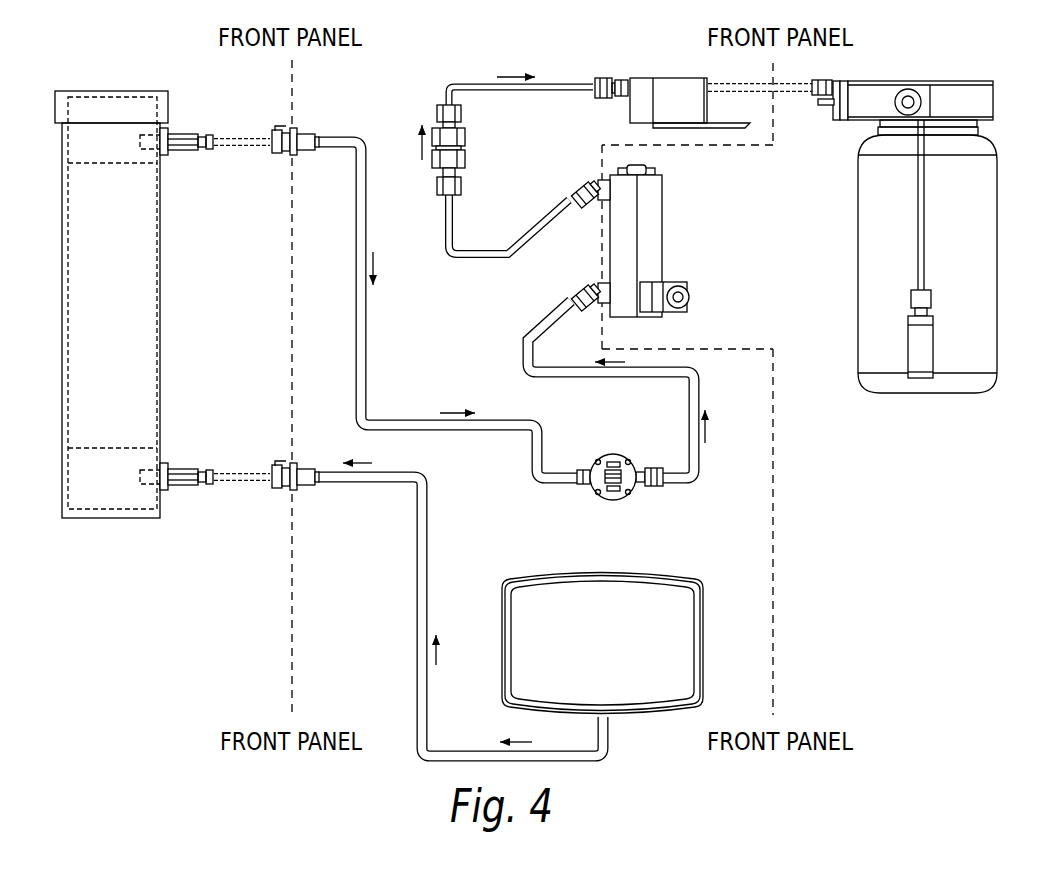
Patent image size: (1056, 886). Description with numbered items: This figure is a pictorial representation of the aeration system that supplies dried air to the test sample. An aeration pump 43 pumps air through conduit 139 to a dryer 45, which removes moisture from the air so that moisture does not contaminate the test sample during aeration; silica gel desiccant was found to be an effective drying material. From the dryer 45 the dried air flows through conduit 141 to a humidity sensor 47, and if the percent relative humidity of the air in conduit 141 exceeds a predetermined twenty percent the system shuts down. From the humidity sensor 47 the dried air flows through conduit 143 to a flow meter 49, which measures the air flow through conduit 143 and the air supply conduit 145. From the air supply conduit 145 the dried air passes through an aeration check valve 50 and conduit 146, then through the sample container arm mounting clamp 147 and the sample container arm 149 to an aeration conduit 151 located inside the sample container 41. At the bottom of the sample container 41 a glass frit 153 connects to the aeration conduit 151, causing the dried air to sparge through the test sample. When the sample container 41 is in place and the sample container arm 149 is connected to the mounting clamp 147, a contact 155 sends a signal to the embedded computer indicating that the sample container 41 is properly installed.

The sample container 41 is at (998, 310).
The aeration pump 43 is at (613, 691).
The dryer 45 is at (123, 297).
The humidity sensor 47 is at (605, 455).
The flow meter 49 is at (658, 210).
The aeration check valve 50 is at (464, 152).
The conduit 139 is at (413, 570).
The conduit 141 is at (368, 334).
The conduit 143 is at (690, 398).
The air supply conduit 145 is at (470, 260).
The conduit 146 is at (477, 84).
The sample container arm mounting clamp 147 is at (672, 78).
The sample container arm 149 is at (938, 82).
The aeration conduit 151 is at (925, 205).
The glass frit 153 is at (930, 365).
The contact 155 is at (825, 106).